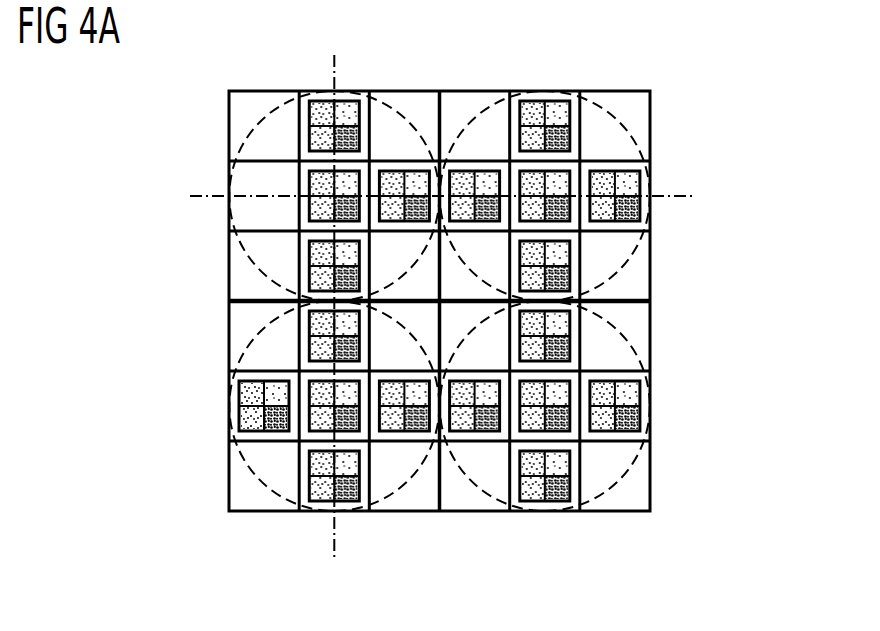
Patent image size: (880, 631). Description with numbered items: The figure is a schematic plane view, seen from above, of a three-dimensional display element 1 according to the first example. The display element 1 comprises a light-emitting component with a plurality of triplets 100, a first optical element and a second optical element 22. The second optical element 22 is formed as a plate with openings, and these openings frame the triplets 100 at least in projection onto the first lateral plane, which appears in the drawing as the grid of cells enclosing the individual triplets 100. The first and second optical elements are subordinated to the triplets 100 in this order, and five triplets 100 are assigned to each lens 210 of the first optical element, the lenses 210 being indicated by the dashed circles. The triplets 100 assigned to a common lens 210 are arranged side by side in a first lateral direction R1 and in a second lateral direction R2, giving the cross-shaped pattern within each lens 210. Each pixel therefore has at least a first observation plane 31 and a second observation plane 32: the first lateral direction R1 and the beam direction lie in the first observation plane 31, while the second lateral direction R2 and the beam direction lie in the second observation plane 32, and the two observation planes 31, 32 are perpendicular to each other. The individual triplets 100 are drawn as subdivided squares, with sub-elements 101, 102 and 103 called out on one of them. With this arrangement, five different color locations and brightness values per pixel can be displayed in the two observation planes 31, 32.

The 3D display element 1 is at (658, 89).
The second optical element 22 is at (232, 160).
The lens 210 is at (252, 124).
The first observation plane 31 is at (687, 197).
The second observation plane 32 is at (336, 552).
The triplet 100 is at (356, 301).
The first sub-pixel 101 is at (232, 390).
The second sub-pixel 102 is at (232, 396).
The third sub-pixel 103 is at (215, 429).
The first lateral direction R1 is at (798, 457).
The second lateral direction R2 is at (818, 343).